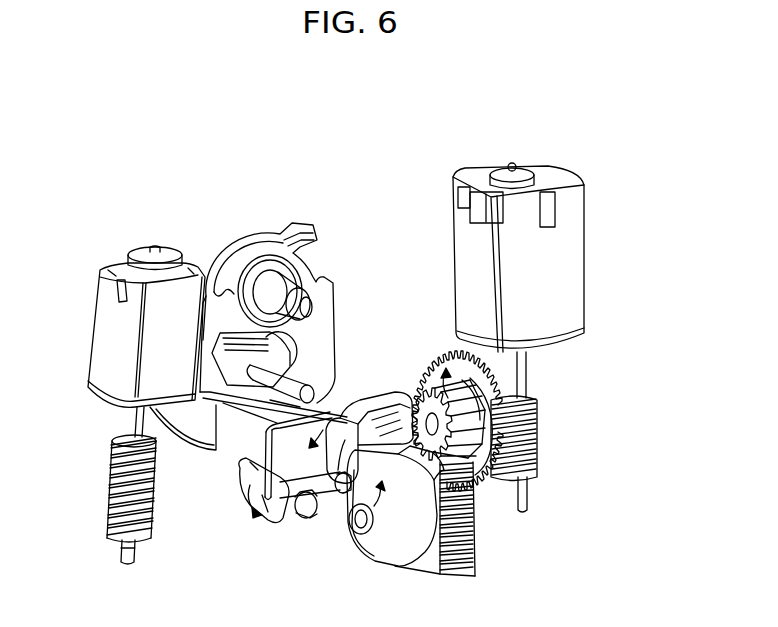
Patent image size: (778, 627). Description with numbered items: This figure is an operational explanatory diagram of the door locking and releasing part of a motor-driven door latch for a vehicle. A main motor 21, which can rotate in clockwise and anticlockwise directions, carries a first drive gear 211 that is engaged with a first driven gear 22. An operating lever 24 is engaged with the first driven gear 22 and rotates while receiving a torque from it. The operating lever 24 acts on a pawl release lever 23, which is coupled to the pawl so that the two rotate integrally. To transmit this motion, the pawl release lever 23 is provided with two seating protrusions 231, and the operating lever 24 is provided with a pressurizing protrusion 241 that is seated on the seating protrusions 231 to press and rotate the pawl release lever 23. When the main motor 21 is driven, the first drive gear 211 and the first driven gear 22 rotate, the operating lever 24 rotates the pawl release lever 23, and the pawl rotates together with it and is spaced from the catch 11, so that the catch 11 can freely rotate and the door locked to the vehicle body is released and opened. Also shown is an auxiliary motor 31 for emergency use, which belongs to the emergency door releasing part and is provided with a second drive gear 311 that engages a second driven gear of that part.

The catch 11 is at (241, 247).
The main motor 21 is at (575, 262).
The first drive gear 211 is at (540, 419).
The first driven gear 22 is at (443, 353).
The pawl release lever 23 is at (270, 440).
The seating protrusions 231 is at (340, 497).
The operating lever 24 is at (476, 547).
The pressurizing protrusion 241 is at (354, 427).
The auxiliary motor 31 is at (101, 333).
The second drive gear 311 is at (114, 488).